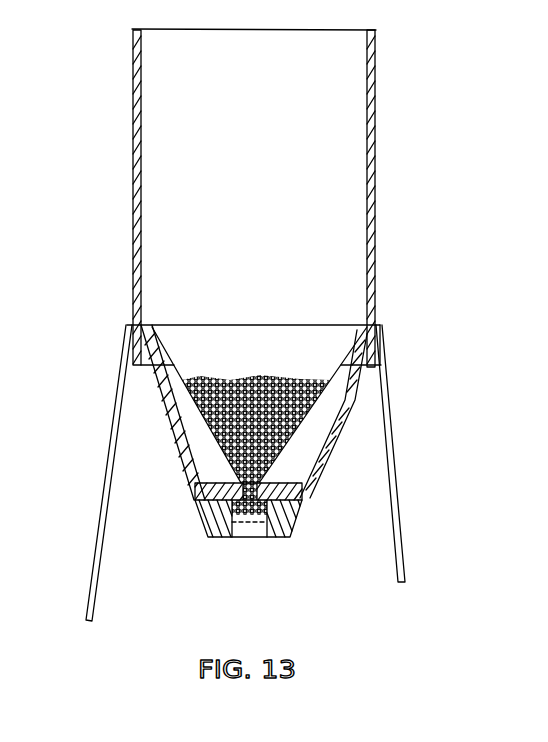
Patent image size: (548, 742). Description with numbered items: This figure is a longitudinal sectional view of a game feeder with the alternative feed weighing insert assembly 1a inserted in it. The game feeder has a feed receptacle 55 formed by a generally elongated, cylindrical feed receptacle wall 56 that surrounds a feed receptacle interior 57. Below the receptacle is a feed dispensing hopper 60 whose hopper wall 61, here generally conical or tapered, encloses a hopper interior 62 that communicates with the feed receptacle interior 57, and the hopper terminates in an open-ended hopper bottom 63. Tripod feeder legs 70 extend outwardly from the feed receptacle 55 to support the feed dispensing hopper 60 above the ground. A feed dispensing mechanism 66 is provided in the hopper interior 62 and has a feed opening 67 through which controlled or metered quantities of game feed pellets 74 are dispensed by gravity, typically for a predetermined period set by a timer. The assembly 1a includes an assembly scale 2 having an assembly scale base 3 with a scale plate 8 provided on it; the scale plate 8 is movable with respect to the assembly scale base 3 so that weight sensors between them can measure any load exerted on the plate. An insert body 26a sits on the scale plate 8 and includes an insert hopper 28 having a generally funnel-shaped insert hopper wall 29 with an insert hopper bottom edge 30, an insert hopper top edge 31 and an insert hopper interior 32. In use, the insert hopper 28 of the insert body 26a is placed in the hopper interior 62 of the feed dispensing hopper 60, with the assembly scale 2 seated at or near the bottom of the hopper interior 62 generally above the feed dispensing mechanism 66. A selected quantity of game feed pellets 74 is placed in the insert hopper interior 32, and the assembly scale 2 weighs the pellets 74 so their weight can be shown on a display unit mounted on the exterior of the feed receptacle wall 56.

The feed weighing insert assembly 1a is at (193, 308).
The assembly scale 2 is at (192, 490).
The assembly scale base 3 is at (287, 511).
The scale plate 8 is at (290, 482).
The insert body 26a is at (165, 316).
The insert hopper 28 is at (190, 412).
The insert hopper wall 29 is at (210, 445).
The insert hopper bottom edge 30 is at (203, 522).
The insert hopper top edge 31 is at (280, 293).
The insert hopper interior 32 is at (290, 350).
The feed receptacle 55 is at (130, 191).
The feed receptacle wall 56 is at (131, 226).
The feed receptacle interior 57 is at (180, 133).
The feed dispensing hopper 60 is at (143, 402).
The hopper wall 61 is at (328, 442).
The hopper interior 62 is at (158, 375).
The hopper bottom 63 is at (205, 538).
The feed dispensing mechanism 66 is at (218, 538).
The feed opening 67 is at (265, 538).
The tripod feeder legs 70 is at (95, 556).
The game feed pellets 74 is at (233, 385).